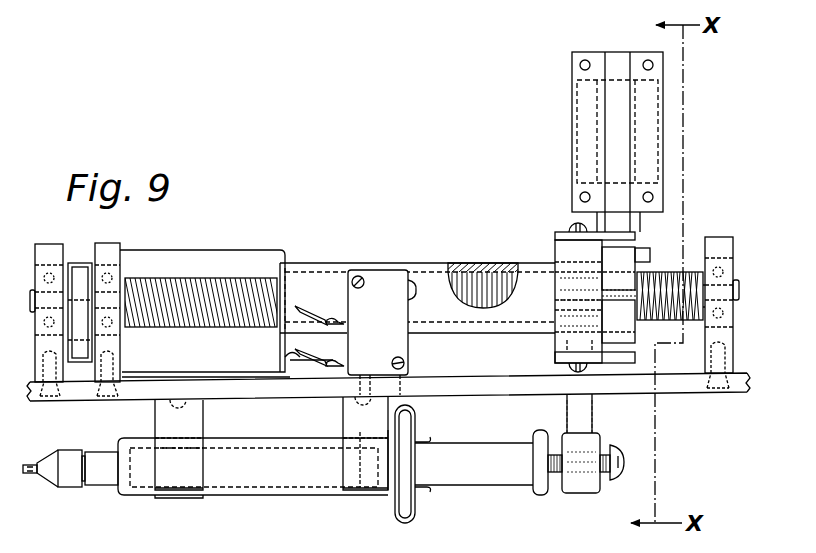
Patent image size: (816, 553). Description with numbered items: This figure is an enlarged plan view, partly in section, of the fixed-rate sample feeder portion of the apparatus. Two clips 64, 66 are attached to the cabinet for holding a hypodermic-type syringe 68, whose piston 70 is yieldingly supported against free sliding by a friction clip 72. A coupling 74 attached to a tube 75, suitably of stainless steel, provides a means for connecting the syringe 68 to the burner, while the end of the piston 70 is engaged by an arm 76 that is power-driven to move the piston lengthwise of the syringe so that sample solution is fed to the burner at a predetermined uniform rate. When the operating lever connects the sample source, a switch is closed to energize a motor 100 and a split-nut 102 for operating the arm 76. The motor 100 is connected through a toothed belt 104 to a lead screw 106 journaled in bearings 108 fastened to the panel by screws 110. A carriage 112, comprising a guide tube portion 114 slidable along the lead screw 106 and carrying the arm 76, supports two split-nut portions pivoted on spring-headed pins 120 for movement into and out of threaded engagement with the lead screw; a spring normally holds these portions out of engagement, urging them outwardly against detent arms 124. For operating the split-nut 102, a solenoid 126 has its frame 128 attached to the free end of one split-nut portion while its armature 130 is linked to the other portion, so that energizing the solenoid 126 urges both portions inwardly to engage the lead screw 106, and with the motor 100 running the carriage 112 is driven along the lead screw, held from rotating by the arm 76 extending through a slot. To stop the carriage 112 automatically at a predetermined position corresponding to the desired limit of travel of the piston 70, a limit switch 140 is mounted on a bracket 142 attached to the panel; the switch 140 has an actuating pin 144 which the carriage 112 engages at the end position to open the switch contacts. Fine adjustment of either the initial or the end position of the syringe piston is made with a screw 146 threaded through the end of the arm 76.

The clip 64 is at (203, 422).
The clip 66 is at (345, 417).
The syringe 68 is at (245, 496).
The piston 70 is at (475, 481).
The friction clip 72 is at (413, 520).
The coupling 74 is at (69, 487).
The tube 75 is at (28, 474).
The arm 76 is at (592, 409).
The motor 100 is at (216, 250).
The split-nut 102 is at (516, 196).
The toothed belt 104 is at (78, 267).
The lead screw 106 is at (227, 327).
The bearings 108 is at (45, 250).
The screws 110 is at (113, 357).
The carriage 112 is at (556, 243).
The guide tube portion 114 is at (338, 262).
The spring-headed pins 120 is at (655, 272).
The detent arms 124 is at (636, 235).
The solenoid 126 is at (577, 132).
The frame 128 is at (605, 63).
The armature 130 is at (573, 223).
The limit switch 140 is at (377, 268).
The bracket 142 is at (410, 374).
The actuating pin 144 is at (415, 288).
The screw 146 is at (617, 476).